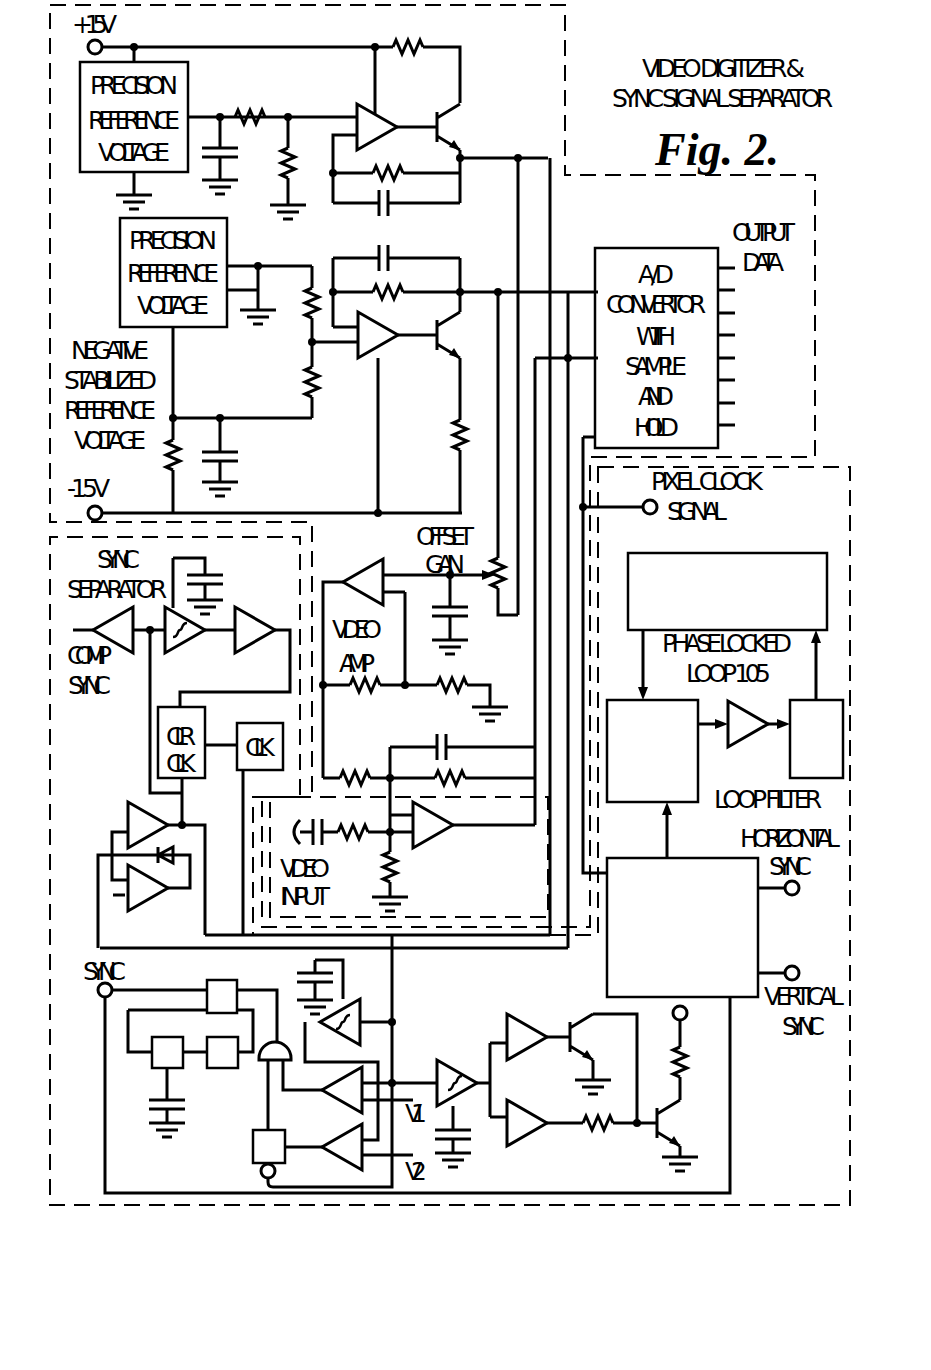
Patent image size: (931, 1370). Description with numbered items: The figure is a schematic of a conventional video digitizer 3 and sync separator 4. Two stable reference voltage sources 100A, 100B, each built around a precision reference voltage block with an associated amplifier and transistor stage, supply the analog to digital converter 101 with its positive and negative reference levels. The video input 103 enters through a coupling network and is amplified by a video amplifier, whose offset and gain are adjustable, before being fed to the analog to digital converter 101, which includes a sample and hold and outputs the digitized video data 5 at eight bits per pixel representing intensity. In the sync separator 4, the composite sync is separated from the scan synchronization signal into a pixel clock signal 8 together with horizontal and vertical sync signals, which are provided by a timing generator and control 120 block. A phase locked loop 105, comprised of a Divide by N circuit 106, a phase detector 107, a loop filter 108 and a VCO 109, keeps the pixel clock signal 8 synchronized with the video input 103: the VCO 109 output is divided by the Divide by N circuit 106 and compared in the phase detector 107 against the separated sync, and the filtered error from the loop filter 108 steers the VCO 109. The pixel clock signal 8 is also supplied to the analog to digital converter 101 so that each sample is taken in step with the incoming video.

The video digitizer 3 is at (620, 173).
The sync separator 4 is at (832, 465).
The digitized video data 5 is at (745, 346).
The pixel clock signal 8 is at (752, 525).
The stable reference voltage source 100A is at (288, 117).
The stable reference voltage source 100B is at (276, 266).
The analog to digital converter 101 is at (668, 248).
The video input 103 is at (363, 907).
The phase locked loop 105 is at (725, 677).
The Divide by N circuit 106 is at (762, 623).
The phase detector 107 is at (667, 795).
The loop filter 108 is at (751, 737).
The VCO 109 is at (831, 768).
The timing generator and control 120 is at (750, 988).